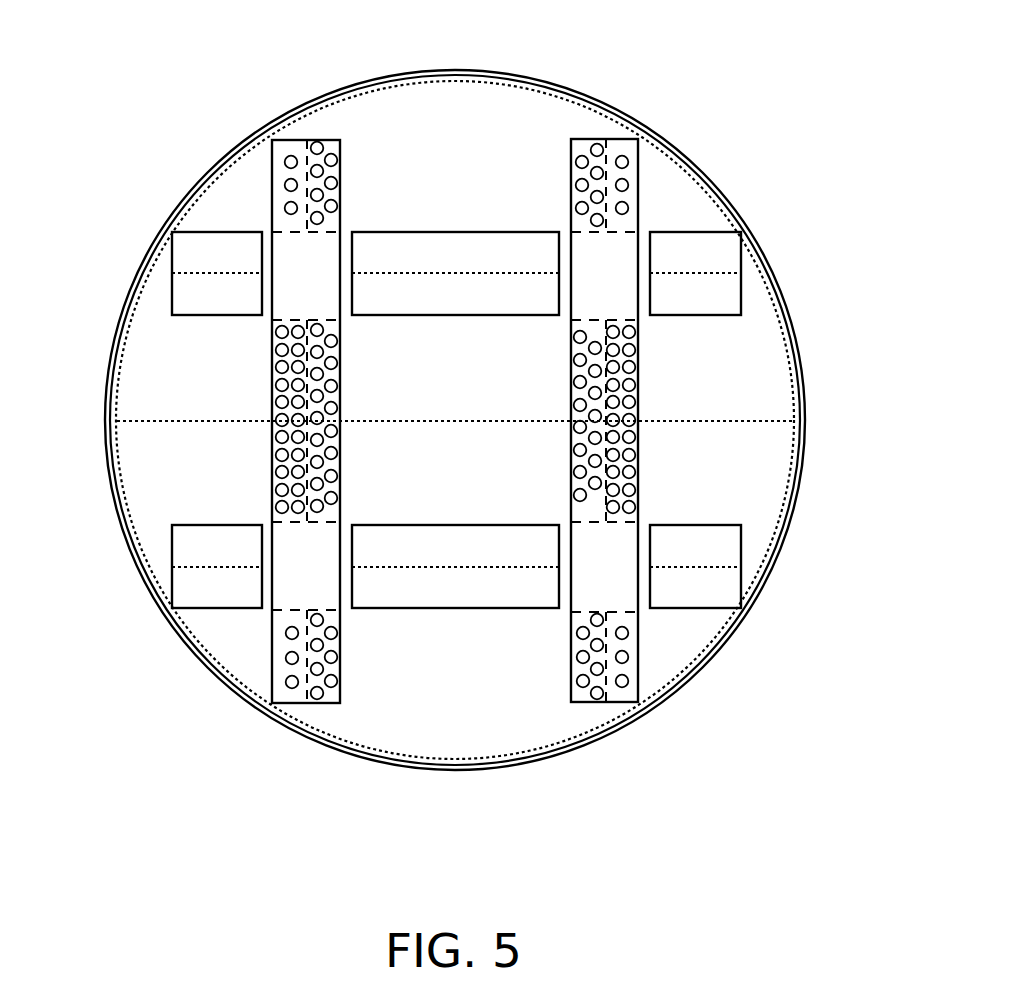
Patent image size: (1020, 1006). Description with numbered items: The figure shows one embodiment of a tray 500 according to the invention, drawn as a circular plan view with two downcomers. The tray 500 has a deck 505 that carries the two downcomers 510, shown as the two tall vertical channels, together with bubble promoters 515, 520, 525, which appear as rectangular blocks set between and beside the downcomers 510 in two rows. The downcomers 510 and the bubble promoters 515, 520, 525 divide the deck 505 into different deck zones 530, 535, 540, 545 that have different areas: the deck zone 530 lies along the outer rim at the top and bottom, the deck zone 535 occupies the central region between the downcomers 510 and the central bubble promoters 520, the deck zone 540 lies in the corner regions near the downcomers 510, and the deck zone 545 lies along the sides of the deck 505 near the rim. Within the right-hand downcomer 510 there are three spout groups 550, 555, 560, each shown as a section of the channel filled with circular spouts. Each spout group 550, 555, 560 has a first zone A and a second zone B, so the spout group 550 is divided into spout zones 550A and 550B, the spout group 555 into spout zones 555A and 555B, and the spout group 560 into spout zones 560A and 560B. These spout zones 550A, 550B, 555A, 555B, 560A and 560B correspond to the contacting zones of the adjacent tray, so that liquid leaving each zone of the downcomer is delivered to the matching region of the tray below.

The tray 500 is at (228, 62).
The deck 505 is at (120, 518).
The downcomers 510 is at (286, 695).
The bubble promoter 515 is at (195, 253).
The bubble promoter 520 is at (436, 237).
The bubble promoter 525 is at (725, 255).
The deck zone 530 is at (452, 100).
The deck zone 535 is at (423, 407).
The deck zone 540 is at (215, 195).
The deck zone 545 is at (133, 343).
The spout group 550 is at (607, 128).
The spout zone 550A is at (590, 148).
The spout zone 550B is at (632, 163).
The spout group 555 is at (605, 421).
The spout zone 555A is at (571, 373).
The spout zone 555B is at (640, 355).
The spout group 560 is at (667, 705).
The spout zone 560A is at (580, 657).
The spout zone 560B is at (632, 652).